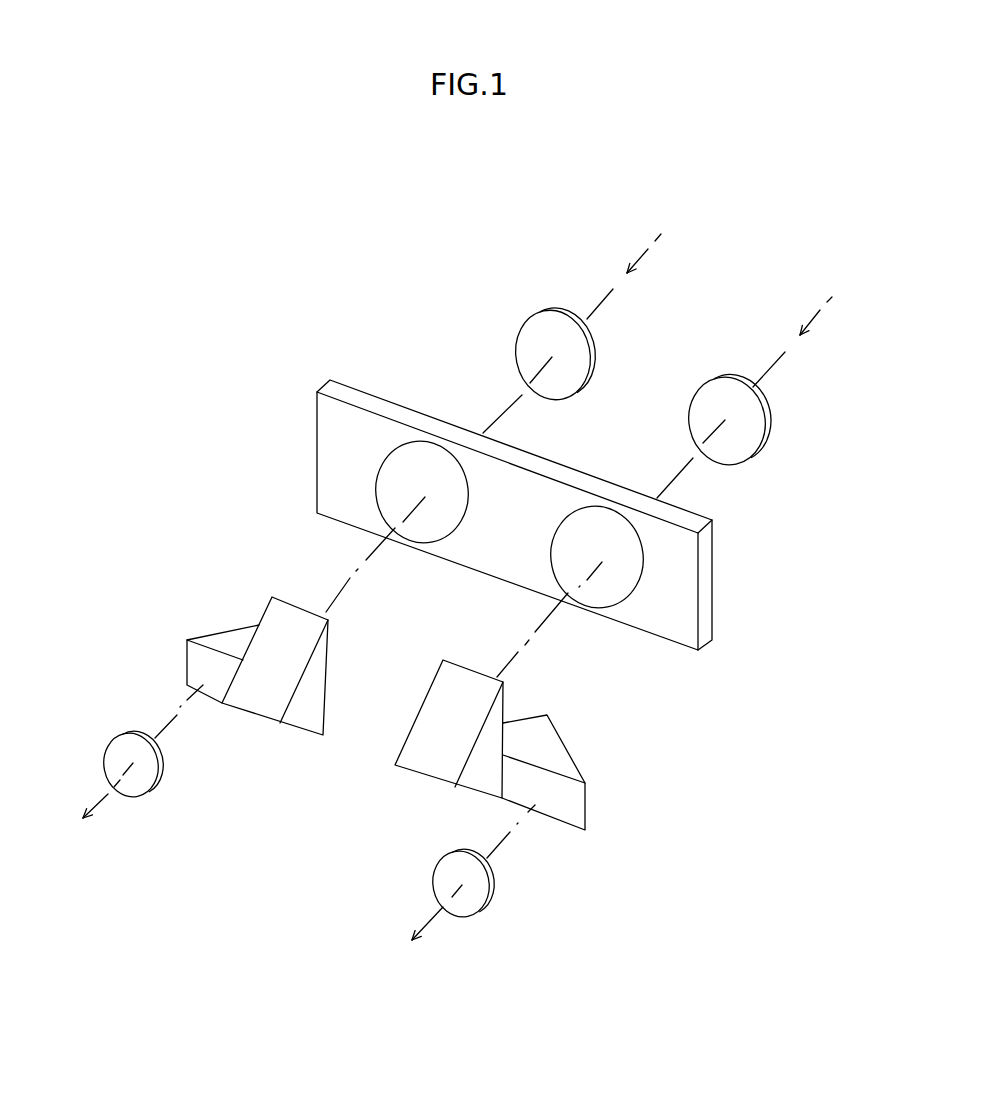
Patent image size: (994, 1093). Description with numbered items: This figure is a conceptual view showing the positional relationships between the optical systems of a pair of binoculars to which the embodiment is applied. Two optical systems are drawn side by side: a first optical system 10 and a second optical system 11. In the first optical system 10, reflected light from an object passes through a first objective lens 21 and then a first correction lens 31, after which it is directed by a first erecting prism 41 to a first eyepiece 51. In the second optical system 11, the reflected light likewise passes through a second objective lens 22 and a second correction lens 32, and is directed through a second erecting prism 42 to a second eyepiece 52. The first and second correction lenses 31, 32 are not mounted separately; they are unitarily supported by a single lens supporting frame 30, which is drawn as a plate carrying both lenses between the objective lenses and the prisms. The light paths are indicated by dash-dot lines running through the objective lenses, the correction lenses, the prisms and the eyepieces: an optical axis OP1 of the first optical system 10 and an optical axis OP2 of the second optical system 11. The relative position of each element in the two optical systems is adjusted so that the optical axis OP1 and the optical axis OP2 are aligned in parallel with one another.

The first optical system 10 is at (458, 569).
The second optical system 11 is at (763, 530).
The first objective lens 21 is at (517, 342).
The second objective lens 22 is at (770, 428).
The lens supporting frame 30 is at (308, 405).
The first correction lens 31 is at (387, 477).
The second correction lens 32 is at (615, 583).
The first erecting prism 41 is at (222, 625).
The second erecting prism 42 is at (608, 812).
The first eyepiece 51 is at (112, 737).
The second eyepiece 52 is at (490, 907).
The optical axis of the first optical system OP1 is at (602, 306).
The optical axis of the second optical system OP2 is at (770, 370).